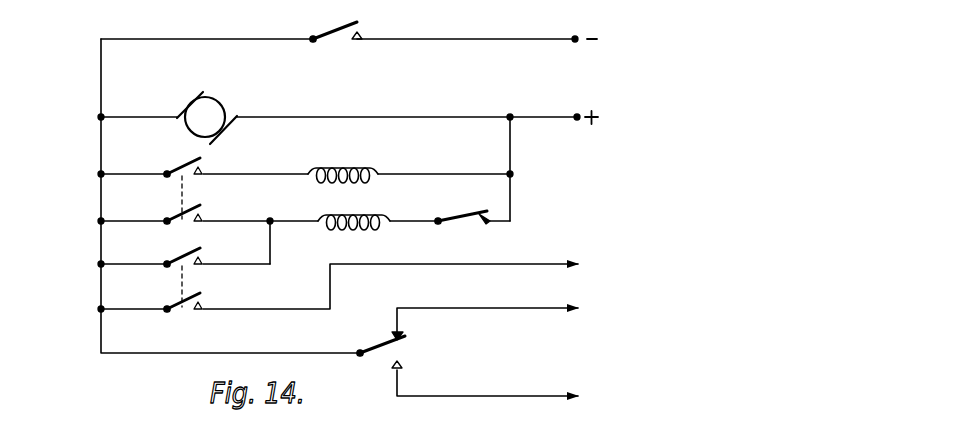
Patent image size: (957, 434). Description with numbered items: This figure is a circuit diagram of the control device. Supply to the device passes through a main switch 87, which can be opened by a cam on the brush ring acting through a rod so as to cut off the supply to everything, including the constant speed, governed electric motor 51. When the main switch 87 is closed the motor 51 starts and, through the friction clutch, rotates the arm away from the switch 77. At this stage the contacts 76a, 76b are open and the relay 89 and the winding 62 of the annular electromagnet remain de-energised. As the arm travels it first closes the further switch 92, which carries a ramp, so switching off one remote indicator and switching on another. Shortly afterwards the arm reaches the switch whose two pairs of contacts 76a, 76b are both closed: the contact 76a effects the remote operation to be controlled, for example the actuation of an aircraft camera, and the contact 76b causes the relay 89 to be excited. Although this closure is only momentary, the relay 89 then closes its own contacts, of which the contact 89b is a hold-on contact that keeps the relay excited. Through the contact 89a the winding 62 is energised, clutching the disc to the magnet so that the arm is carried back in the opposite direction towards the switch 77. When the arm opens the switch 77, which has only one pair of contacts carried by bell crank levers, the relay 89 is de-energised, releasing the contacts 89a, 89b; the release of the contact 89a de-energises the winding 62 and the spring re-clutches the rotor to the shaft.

The main switch 87 is at (366, 28).
The electric motor 51 is at (220, 114).
The relay contact 89a is at (201, 168).
The hold-on contact 89b is at (201, 215).
The winding 62 is at (343, 165).
The relay 89 is at (354, 228).
The switch 77 is at (474, 219).
The contact 76b is at (204, 257).
The contact 76a is at (204, 302).
The switch 92 is at (398, 348).